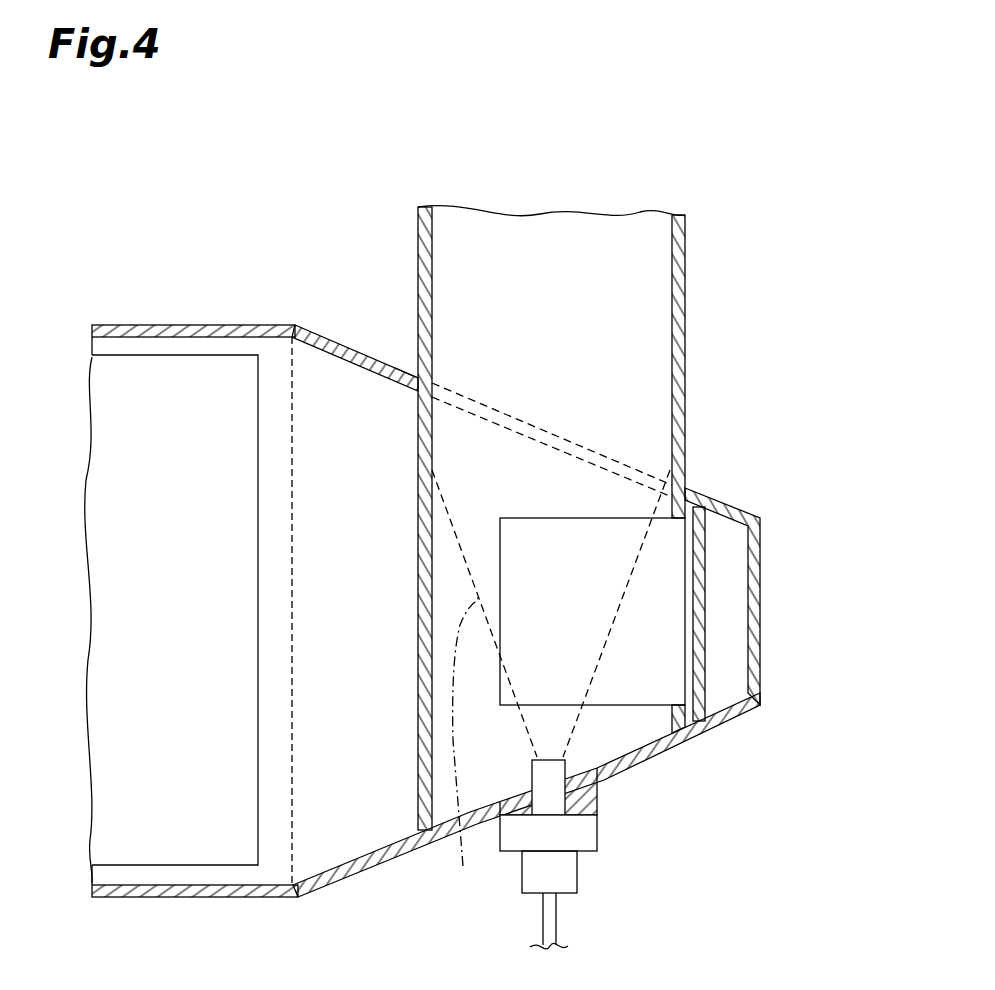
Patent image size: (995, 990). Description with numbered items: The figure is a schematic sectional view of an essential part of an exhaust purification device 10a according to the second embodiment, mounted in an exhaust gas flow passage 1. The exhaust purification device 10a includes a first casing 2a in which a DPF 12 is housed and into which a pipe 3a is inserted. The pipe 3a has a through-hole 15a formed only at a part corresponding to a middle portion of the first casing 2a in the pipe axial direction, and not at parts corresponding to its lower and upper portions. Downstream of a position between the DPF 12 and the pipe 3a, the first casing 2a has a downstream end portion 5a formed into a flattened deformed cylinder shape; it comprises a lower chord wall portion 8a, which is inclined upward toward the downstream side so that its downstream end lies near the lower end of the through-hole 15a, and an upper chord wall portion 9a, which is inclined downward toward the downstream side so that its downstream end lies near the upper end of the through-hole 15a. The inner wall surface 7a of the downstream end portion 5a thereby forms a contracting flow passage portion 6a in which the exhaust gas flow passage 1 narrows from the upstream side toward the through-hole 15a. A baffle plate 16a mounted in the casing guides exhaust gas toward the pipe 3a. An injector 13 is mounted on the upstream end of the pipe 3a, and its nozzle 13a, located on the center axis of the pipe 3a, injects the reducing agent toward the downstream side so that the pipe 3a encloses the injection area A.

The exhaust purification device 10a is at (728, 156).
The first casing 2a is at (202, 316).
The DPF 12 is at (143, 355).
The upper chord wall portion 9a is at (328, 336).
The lower chord wall portion 8a is at (345, 877).
The downstream end portion 5a is at (526, 611).
The inner wall surface 7a is at (378, 372).
The pipe 3a is at (692, 318).
The contracting flow passage portion 6a is at (392, 623).
The exhaust gas flow passage 1 is at (362, 611).
The baffle plate 16a is at (707, 560).
The through-hole 15a is at (660, 634).
The nozzle 13a is at (557, 790).
The injector 13 is at (577, 872).
The injection area A is at (465, 745).